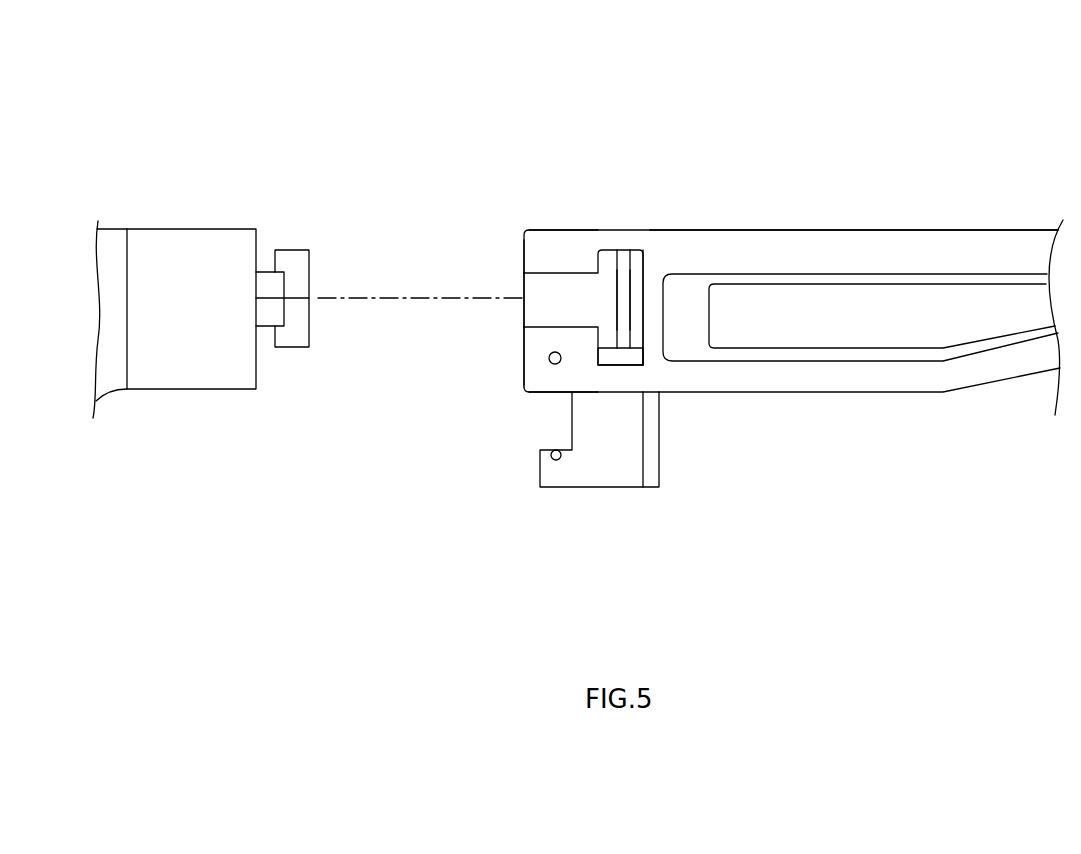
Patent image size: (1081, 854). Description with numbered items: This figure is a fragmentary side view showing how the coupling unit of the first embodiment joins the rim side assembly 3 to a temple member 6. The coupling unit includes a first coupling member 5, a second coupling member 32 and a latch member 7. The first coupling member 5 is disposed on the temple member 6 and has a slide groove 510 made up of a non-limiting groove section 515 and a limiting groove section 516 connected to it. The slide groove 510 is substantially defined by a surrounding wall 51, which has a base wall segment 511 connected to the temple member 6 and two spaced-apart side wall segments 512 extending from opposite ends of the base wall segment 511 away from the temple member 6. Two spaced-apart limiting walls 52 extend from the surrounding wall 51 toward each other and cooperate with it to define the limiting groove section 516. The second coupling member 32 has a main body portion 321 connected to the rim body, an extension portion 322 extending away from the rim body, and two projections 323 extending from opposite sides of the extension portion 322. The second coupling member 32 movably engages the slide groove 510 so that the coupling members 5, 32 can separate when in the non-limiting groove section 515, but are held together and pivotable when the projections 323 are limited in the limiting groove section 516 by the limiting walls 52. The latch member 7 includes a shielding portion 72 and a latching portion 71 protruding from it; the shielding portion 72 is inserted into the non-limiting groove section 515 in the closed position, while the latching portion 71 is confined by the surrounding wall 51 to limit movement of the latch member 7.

The drive assembly 3 is at (206, 167).
The second coupling member 32 is at (158, 423).
The main body portion 321 is at (165, 250).
The extension portion 322 is at (275, 307).
The projections 323 is at (302, 264).
The first coupling member 5 is at (648, 223).
The surrounding wall 51 is at (550, 223).
The limiting walls 52 is at (535, 263).
The slide groove 510 is at (602, 247).
The base wall segment 511 is at (657, 293).
The side wall segments 512 is at (577, 237).
The non-limiting groove section 515 is at (617, 307).
The limiting groove section 516 is at (525, 288).
The temple member 6 is at (852, 382).
The latch member 7 is at (690, 485).
The latching portion 71 is at (647, 360).
The shielding portion 72 is at (610, 477).